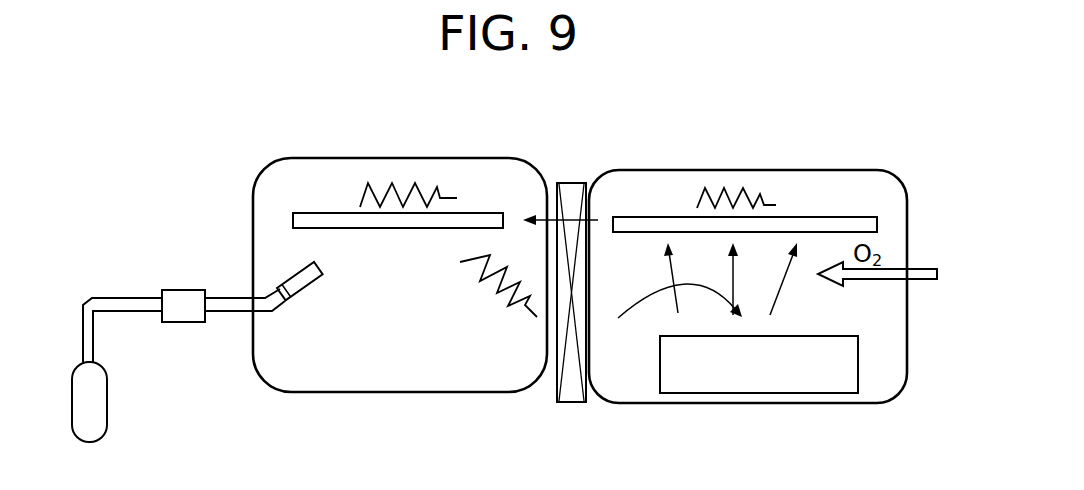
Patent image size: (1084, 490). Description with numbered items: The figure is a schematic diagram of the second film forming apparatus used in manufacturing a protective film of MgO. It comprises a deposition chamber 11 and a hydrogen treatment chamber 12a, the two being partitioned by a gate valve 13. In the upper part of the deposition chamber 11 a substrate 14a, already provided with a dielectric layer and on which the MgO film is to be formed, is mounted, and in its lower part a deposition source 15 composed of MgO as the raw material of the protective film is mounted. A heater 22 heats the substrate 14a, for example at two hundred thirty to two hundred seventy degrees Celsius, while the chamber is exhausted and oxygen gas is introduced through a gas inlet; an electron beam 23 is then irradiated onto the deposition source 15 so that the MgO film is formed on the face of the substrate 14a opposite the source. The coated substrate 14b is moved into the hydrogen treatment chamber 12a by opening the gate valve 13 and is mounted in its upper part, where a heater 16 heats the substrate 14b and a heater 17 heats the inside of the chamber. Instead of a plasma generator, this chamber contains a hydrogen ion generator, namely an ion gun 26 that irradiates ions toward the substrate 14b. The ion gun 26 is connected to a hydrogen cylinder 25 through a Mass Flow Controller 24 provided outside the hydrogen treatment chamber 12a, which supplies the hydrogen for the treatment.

The deposition chamber 11 is at (835, 192).
The hydrogen treatment chamber 12a is at (485, 183).
The gate valve 13 is at (572, 402).
The substrate 14a is at (650, 223).
The substrate 14b is at (327, 220).
The deposition source 15 is at (758, 378).
The heater 16 is at (427, 182).
The heater 17 is at (485, 293).
The heater 22 is at (735, 190).
The electron beam 23 is at (633, 298).
The Mass Flow Controller 24 is at (182, 322).
The hydrogen cylinder 25 is at (107, 413).
The ion gun 26 is at (298, 282).